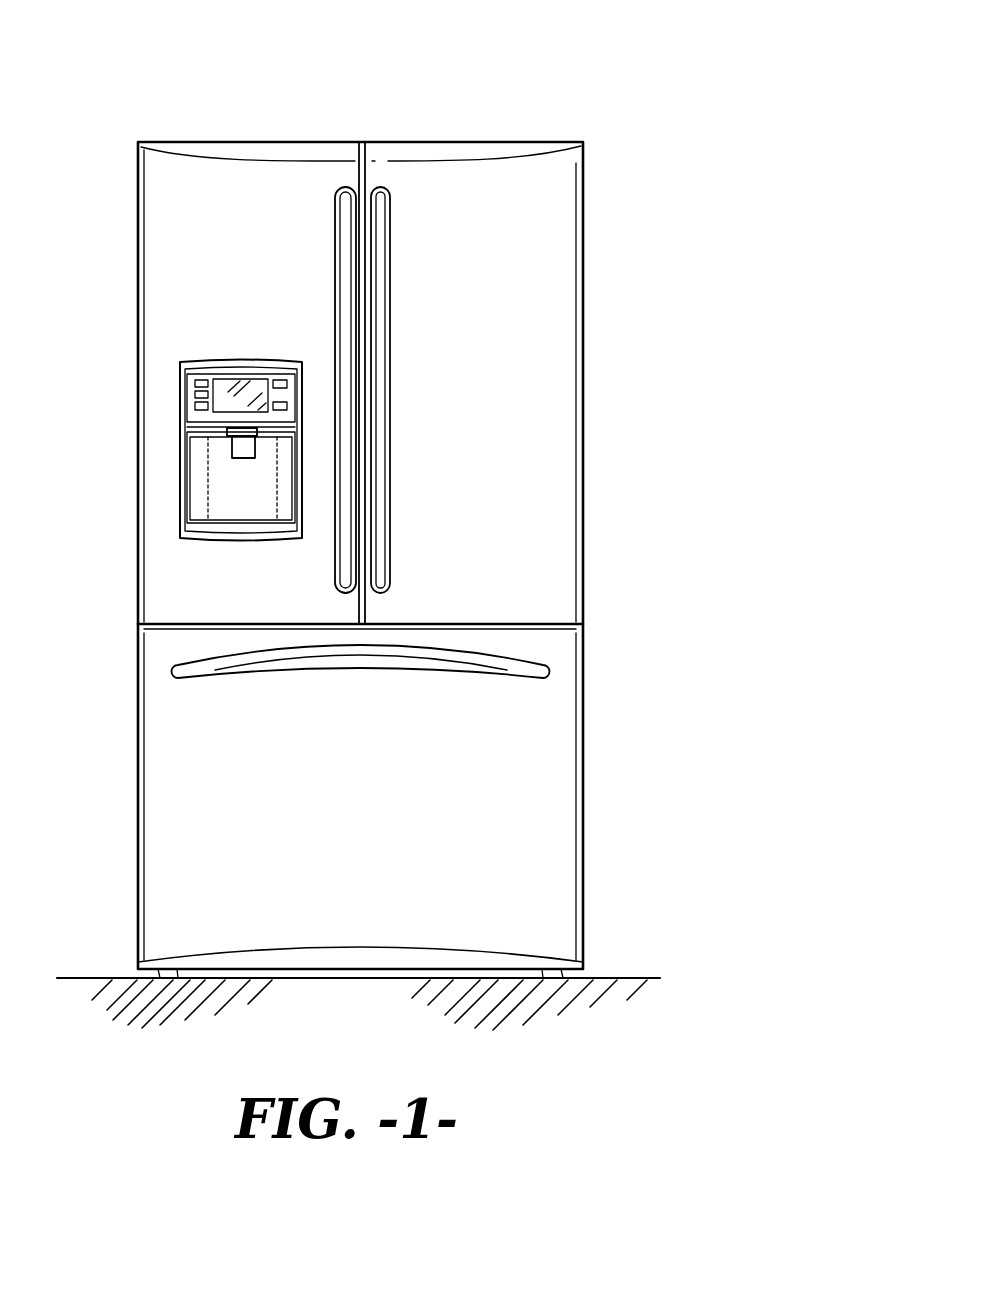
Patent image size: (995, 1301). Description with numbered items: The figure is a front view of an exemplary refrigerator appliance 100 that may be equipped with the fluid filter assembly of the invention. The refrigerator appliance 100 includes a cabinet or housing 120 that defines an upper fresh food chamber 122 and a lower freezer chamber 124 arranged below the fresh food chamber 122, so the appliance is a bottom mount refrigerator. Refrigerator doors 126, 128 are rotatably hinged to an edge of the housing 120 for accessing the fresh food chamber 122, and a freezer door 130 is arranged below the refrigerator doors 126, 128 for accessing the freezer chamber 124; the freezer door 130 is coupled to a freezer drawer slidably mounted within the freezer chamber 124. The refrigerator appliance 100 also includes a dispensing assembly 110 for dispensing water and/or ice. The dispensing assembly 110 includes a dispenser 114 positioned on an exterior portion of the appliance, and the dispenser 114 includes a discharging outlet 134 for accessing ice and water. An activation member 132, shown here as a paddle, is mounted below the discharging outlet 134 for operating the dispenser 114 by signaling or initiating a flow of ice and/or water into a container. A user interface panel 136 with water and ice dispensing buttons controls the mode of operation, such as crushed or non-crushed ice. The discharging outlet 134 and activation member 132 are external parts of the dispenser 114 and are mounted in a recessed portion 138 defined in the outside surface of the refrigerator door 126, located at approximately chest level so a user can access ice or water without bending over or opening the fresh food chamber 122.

The refrigerator appliance 100 is at (553, 79).
The dispensing assembly 110 is at (200, 344).
The dispenser 114 is at (235, 487).
The housing 120 is at (137, 808).
The fresh food chamber 122 is at (547, 385).
The freezer chamber 124 is at (547, 745).
The refrigerator door 126 is at (167, 232).
The refrigerator door 128 is at (558, 272).
The freezer door 130 is at (552, 848).
The activation member 132 is at (235, 443).
The discharging outlet 134 is at (230, 448).
The user interface panel 136 is at (193, 392).
The recessed portion 138 is at (257, 505).